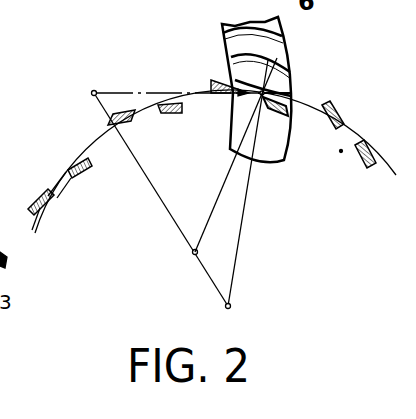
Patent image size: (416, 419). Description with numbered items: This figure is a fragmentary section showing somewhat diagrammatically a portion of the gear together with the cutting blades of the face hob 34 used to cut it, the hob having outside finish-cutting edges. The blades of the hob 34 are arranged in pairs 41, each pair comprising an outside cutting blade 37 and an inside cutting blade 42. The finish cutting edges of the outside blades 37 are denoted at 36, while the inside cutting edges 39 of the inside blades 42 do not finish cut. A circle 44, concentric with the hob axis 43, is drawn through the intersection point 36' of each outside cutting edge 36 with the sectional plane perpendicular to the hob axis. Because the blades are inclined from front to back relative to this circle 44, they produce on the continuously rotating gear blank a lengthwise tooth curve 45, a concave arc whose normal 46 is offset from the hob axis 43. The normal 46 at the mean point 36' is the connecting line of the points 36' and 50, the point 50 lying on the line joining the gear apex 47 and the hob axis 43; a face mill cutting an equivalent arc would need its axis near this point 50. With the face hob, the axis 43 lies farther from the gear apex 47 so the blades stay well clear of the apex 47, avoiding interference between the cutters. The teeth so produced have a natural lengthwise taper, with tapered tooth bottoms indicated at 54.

The hob 34 is at (340, 151).
The finish cutting edge 36 is at (38, 162).
The intersection point 36' is at (231, 108).
The outside cutting blade 37 is at (71, 167).
The inside cutting edge 39 is at (157, 112).
The blade pair 41 is at (58, 198).
The inside cutting blade 42 is at (37, 203).
The hob axis 43 is at (247, 185).
The circle 44 is at (350, 141).
The concave arc 45 is at (321, 94).
The normal 46 is at (212, 207).
The gear apex 47 is at (154, 187).
The point 50 is at (183, 252).
The tapered tooth bottom 54 is at (270, 60).